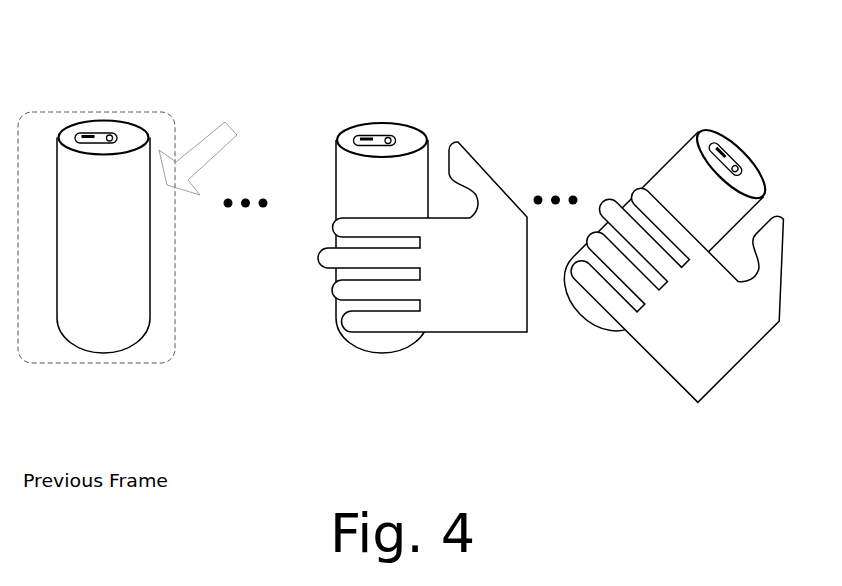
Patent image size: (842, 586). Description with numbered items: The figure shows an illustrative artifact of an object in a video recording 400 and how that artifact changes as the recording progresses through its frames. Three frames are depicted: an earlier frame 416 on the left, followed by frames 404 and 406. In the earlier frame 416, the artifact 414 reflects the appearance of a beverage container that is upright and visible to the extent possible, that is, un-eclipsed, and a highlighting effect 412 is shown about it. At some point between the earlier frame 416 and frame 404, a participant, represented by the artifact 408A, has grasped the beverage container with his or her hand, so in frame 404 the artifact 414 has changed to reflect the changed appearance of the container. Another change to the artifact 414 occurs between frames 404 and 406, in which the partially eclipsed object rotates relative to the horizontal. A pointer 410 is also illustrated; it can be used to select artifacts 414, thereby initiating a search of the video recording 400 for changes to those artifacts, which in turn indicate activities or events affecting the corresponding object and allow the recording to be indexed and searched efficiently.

The video recording 400 is at (547, 82).
The frame 404 is at (392, 397).
The frame 406 is at (627, 397).
The artifact of participant 408A is at (480, 332).
The pointer 410 is at (227, 122).
The highlighting effect 412 is at (50, 112).
The artifact 414 is at (127, 128).
The earlier frame 416 is at (97, 397).